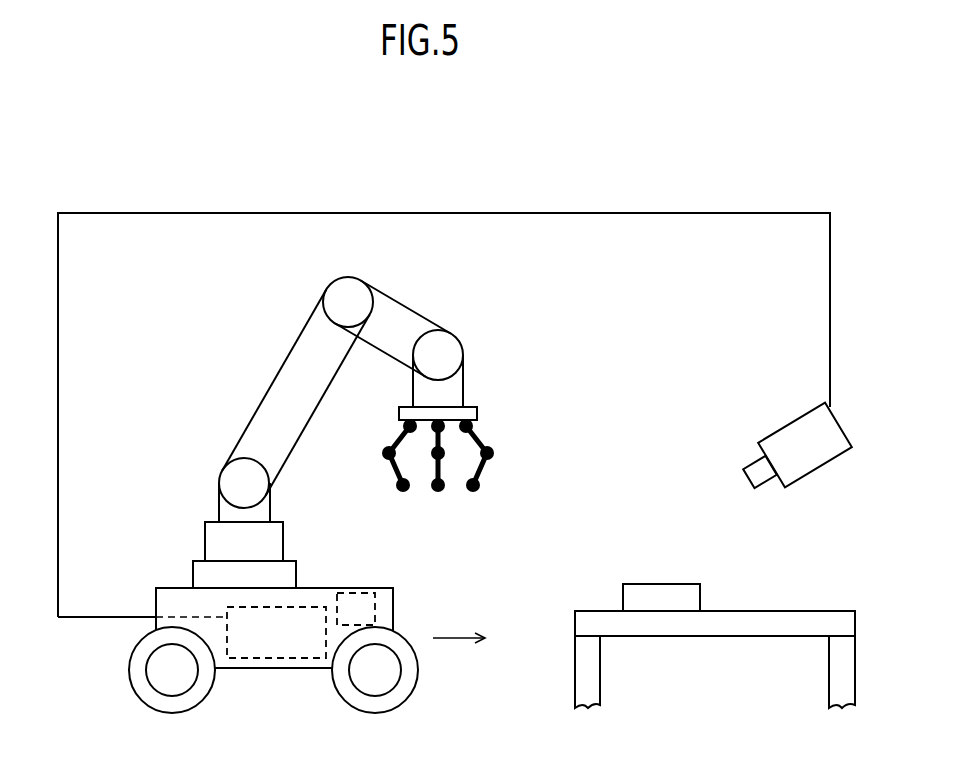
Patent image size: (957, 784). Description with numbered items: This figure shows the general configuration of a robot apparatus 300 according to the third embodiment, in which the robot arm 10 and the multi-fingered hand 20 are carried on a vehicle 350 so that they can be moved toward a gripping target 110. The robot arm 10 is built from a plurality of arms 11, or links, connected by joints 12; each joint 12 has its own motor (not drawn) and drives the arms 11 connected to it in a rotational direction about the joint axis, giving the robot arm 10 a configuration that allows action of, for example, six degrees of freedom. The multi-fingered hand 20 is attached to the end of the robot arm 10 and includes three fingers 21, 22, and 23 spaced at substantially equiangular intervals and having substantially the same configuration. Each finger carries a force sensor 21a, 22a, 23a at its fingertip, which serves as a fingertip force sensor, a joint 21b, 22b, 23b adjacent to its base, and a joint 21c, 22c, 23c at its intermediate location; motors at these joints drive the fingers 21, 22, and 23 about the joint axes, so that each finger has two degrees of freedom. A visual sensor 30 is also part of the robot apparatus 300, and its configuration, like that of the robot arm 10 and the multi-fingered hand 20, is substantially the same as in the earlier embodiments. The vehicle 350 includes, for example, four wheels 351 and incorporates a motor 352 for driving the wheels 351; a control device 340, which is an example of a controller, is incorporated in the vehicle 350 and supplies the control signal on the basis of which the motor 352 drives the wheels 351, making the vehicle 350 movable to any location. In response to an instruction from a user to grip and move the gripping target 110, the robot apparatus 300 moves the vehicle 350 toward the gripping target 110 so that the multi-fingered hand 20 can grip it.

The robot arm 10 is at (342, 425).
The arm 11 is at (262, 400).
The joint 12 is at (348, 296).
The multi-fingered hand 20 is at (438, 459).
The finger 21 is at (364, 461).
The force sensor 21a is at (402, 486).
The joint 21b is at (405, 426).
The joint 21c is at (389, 453).
The finger 22 is at (435, 489).
The force sensor 22a is at (440, 490).
The joint 22b is at (440, 426).
The joint 22c is at (438, 453).
The finger 23 is at (509, 468).
The force sensor 23a is at (478, 485).
The joint 23b is at (475, 427).
The joint 23c is at (492, 453).
The visual sensor 30 is at (815, 403).
The gripping target 110 is at (702, 593).
The robot apparatus 300 is at (662, 336).
The control device 340 is at (280, 663).
The vehicle 350 is at (278, 648).
The wheel 351 is at (135, 685).
The motor 352 is at (375, 602).